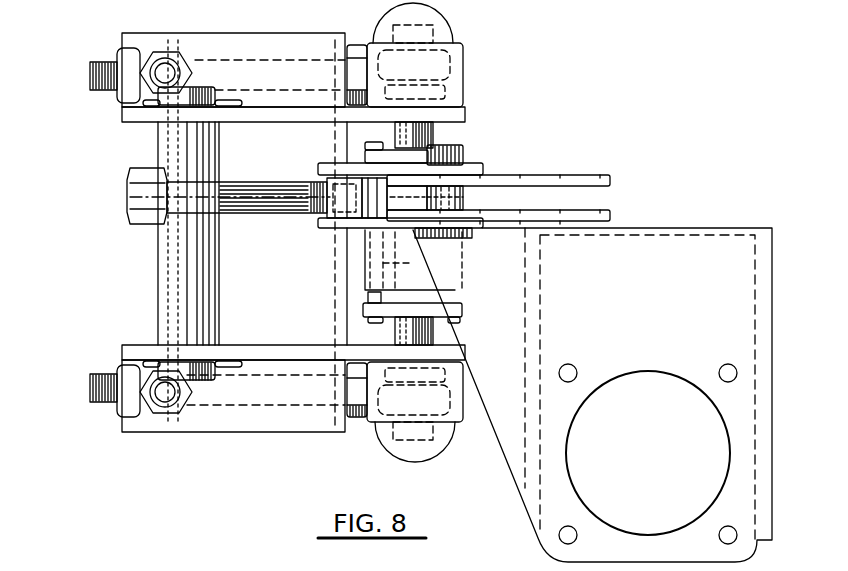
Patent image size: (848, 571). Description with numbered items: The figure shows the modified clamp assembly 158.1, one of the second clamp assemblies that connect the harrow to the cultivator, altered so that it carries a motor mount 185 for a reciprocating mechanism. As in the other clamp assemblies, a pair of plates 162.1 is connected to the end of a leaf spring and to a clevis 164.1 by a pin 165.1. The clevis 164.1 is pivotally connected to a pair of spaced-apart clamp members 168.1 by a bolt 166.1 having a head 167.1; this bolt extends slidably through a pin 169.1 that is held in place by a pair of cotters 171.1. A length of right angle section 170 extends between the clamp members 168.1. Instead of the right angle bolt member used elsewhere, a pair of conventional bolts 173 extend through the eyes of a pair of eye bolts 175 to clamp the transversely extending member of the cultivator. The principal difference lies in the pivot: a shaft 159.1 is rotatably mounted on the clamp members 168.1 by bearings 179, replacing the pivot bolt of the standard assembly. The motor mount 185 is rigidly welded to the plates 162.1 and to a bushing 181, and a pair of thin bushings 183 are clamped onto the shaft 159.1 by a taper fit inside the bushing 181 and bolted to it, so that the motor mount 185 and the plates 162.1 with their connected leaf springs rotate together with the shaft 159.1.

The clamp assembly 158.1 is at (600, 87).
The shaft 159.1 is at (422, 332).
The plates 162.1 is at (595, 176).
The clevis 164.1 is at (475, 167).
The pin 165.1 is at (443, 157).
The bolt 166.1 is at (287, 193).
The head 167.1 is at (137, 173).
The clamp members 168.1 is at (310, 103).
The pin 169.1 is at (190, 285).
The right angle section 170 is at (148, 282).
The cotters 171.1 is at (213, 565).
The bolts 173 is at (97, 63).
The eye bolts 175 is at (167, 73).
The bearings 179 is at (443, 98).
The bushing 181 is at (410, 258).
The thin bushings 183 is at (365, 155).
The motor mount 185 is at (688, 265).